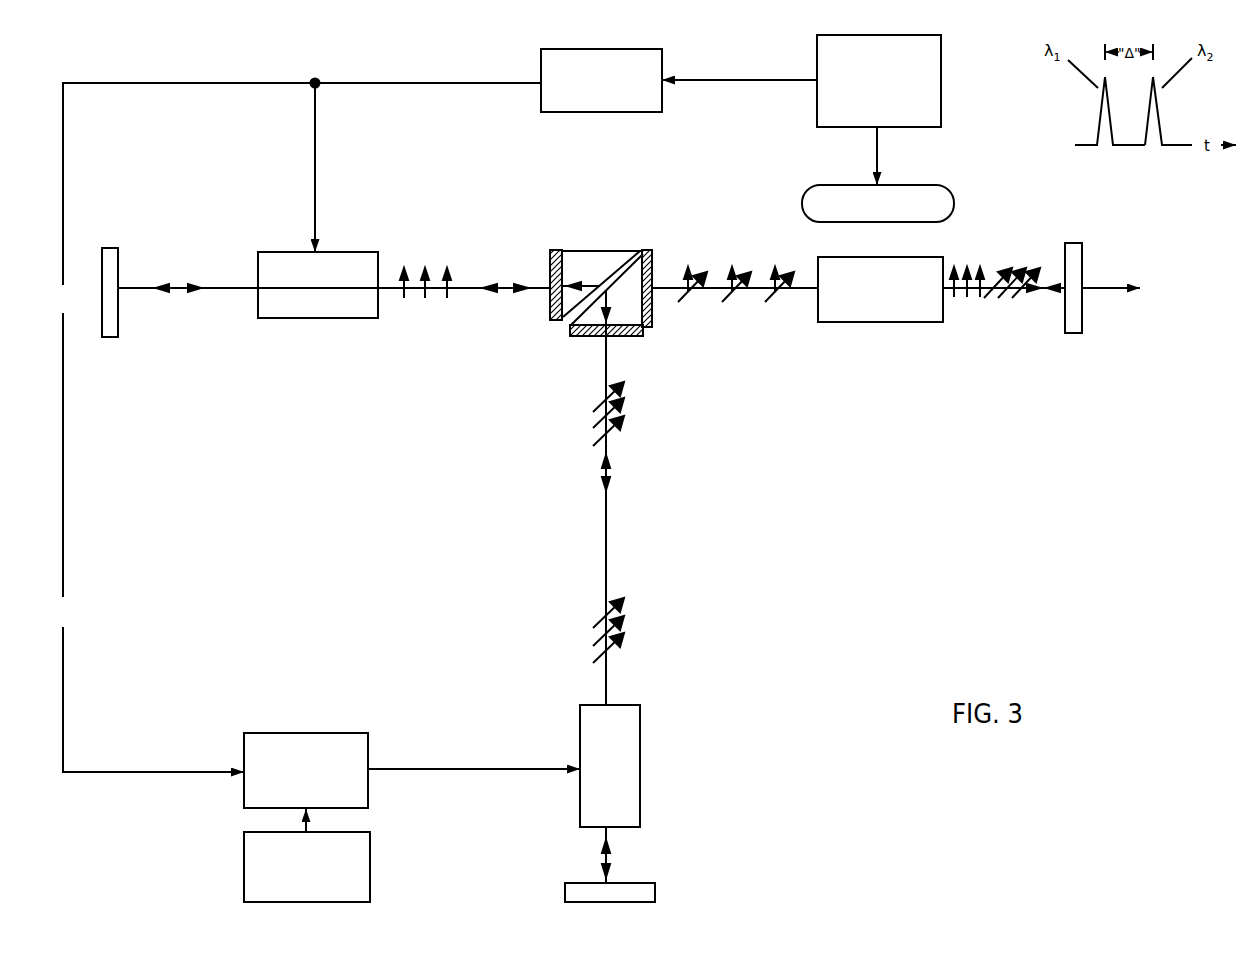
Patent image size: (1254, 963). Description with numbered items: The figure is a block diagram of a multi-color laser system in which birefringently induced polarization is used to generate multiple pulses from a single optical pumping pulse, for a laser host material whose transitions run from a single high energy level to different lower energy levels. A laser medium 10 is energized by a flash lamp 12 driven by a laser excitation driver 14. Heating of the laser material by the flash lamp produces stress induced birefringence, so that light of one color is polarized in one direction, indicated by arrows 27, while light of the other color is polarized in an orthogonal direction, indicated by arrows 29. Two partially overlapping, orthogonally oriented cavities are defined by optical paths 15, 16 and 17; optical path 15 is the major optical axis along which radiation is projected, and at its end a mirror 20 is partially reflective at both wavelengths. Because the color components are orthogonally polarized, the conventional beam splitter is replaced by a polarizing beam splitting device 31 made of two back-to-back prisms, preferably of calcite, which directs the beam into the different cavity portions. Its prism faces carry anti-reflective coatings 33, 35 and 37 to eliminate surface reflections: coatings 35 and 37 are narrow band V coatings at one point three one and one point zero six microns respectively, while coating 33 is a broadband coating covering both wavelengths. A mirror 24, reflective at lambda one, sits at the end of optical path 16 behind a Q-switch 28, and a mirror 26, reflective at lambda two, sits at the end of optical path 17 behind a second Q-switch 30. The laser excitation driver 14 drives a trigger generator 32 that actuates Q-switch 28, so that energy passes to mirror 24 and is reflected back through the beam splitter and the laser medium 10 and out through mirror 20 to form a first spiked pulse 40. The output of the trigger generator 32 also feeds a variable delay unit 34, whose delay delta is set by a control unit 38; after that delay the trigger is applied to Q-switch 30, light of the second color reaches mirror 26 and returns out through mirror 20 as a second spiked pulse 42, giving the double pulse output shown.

The laser medium 10 is at (878, 323).
The flash lamp 12 is at (946, 180).
The laser excitation driver 14 is at (942, 93).
The optical path 15 is at (992, 283).
The optical path 16 is at (469, 281).
The optical path 17 is at (613, 543).
The mirror 20 is at (1062, 242).
The mirror 24 is at (100, 291).
The mirror 26 is at (563, 882).
The arrows 27 is at (683, 263).
The Q-switch 28 is at (268, 321).
The arrows 29 is at (668, 302).
The Q-switch 30 is at (643, 735).
The polarizing beam splitting device 31 is at (548, 315).
The trigger generator 32 is at (590, 115).
The anti-reflective coating 33 is at (652, 327).
The variable delay unit 34 is at (273, 730).
The anti-reflective coating 35 is at (620, 346).
The anti-reflective coating 37 is at (547, 263).
The control unit 38 is at (373, 870).
The pulse 40 is at (1106, 147).
The pulse 42 is at (1155, 147).